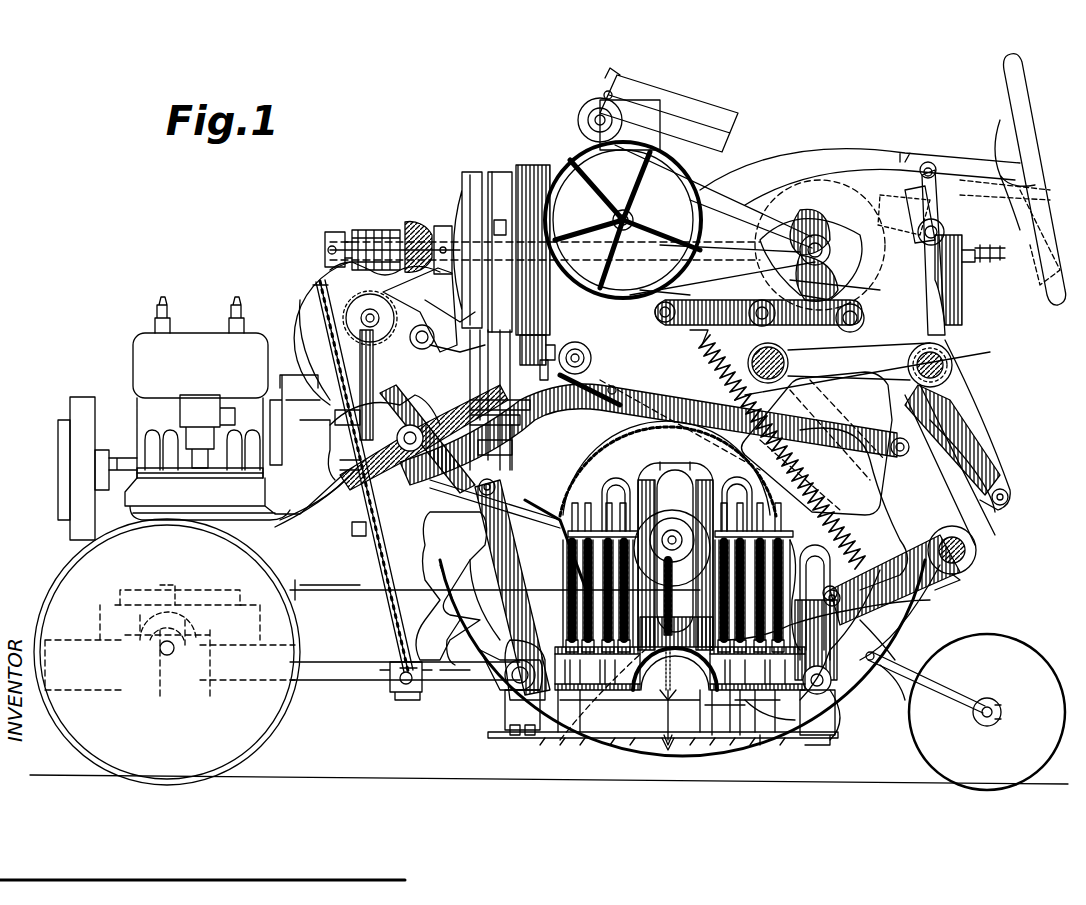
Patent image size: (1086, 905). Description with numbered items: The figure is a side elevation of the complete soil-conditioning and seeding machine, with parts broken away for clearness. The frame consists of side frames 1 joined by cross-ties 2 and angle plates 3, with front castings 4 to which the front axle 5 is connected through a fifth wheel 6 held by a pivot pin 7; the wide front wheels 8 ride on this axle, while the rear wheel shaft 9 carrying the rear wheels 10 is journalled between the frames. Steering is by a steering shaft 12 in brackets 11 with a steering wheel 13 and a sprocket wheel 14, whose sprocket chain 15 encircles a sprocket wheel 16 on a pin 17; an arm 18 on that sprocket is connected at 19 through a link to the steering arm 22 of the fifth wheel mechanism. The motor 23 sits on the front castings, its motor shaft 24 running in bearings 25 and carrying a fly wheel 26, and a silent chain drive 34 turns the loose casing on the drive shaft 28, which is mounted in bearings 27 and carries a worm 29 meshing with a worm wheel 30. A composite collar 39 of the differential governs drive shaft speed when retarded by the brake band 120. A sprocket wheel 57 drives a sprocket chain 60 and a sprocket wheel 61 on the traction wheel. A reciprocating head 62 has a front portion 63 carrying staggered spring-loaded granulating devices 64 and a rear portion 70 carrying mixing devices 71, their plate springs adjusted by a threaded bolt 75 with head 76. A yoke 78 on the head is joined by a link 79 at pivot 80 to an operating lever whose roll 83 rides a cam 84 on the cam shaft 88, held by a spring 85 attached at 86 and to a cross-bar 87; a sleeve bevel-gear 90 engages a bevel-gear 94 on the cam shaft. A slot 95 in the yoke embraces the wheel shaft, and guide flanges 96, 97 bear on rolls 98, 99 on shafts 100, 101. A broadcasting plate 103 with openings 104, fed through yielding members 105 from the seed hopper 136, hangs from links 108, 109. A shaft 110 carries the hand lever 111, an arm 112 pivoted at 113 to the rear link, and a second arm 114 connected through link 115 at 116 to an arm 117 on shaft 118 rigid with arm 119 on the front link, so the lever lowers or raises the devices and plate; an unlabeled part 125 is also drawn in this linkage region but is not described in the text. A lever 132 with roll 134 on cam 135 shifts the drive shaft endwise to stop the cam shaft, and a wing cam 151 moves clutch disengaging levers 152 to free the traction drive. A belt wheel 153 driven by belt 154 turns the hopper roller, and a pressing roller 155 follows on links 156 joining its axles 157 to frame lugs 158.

The side frames 1 is at (945, 335).
The cross-ties 2 is at (780, 370).
The angle plates 3 is at (453, 330).
The front castings 4 is at (310, 592).
The front axle 5 is at (165, 656).
The fifth wheel 6 is at (212, 625).
The pivot pin 7 is at (172, 585).
The front wheels 8 is at (270, 727).
The rear wheel shaft 9 is at (672, 562).
The rear wheels 10 is at (772, 760).
The brackets 11 is at (440, 290).
The steering shaft 12 is at (880, 190).
The steering wheel 13 is at (1005, 85).
The sprocket wheel 14 is at (318, 282).
The sprocket chain 15 is at (358, 398).
The sprocket wheel 16 is at (350, 508).
The pin 17 is at (352, 530).
The arm 18 is at (382, 610).
The connection 19 is at (405, 690).
The steering arm 22 is at (336, 672).
The motor 23 is at (142, 368).
The motor shaft 24 is at (135, 440).
The bearings 25 is at (320, 462).
The fly wheel 26 is at (76, 405).
The bearings 27 is at (398, 222).
The drive shaft 28 is at (428, 226).
The worm 29 is at (360, 230).
The worm wheel 30 is at (333, 248).
The silent chain drive 34 is at (525, 180).
The composite collar 39 is at (470, 182).
The sprocket wheel 57 is at (355, 310).
The sprocket chain 60 is at (335, 340).
The sprocket wheel 61 is at (788, 360).
The head 62 is at (672, 688).
The front portion 63 is at (560, 740).
The granulating devices 64 is at (665, 718).
The rear portion 70 is at (760, 765).
The mixing devices 71 is at (720, 716).
The threaded bolt 75 is at (590, 590).
The head 76 is at (640, 474).
The yoke 78 is at (650, 462).
The link 79 is at (600, 386).
The pivot 80 is at (760, 290).
The roll 83 is at (850, 318).
The cam 84 is at (808, 200).
The spring 85 is at (808, 478).
The spring connection 86 is at (732, 380).
The cross-bar 87 is at (910, 615).
The cam shaft 88 is at (805, 240).
The bevel-gear 90 is at (915, 215).
The bevel-gear 94 is at (790, 185).
The slot 95 is at (685, 485).
The front guide flange 96 is at (510, 645).
The rear guide flange 97 is at (765, 595).
The roll 98 is at (505, 700).
The roll 99 is at (840, 712).
The transverse shaft 100 is at (510, 680).
The transverse shaft 101 is at (832, 685).
The broadcasting plate 103 is at (640, 745).
The broadcasting openings 104 is at (680, 742).
The yielding members 105 is at (612, 325).
The link 108 is at (505, 613).
The link 109 is at (885, 640).
The shaft 110 is at (975, 550).
The hand lever 111 is at (940, 400).
The arm 112 is at (955, 585).
The pivot 113 is at (800, 575).
The second arm 114 is at (920, 475).
The link 115 is at (800, 450).
The pivot 116 is at (410, 500).
The arm 117 is at (355, 485).
The shaft 118 is at (342, 467).
The arm 119 is at (470, 500).
The brake band 120 is at (492, 170).
The arm 125 is at (425, 495).
The lever 132 is at (965, 287).
The roll 134 is at (1008, 498).
The cam 135 is at (995, 512).
The seed hopper 136 is at (690, 128).
The wing cam 151 is at (345, 418).
The clutch disengaging levers 152 is at (328, 375).
The belt wheel 153 is at (565, 165).
The belt 154 is at (765, 210).
The roller 155 is at (1010, 650).
The links 156 is at (905, 700).
The axles 157 is at (987, 700).
The lugs 158 is at (880, 658).